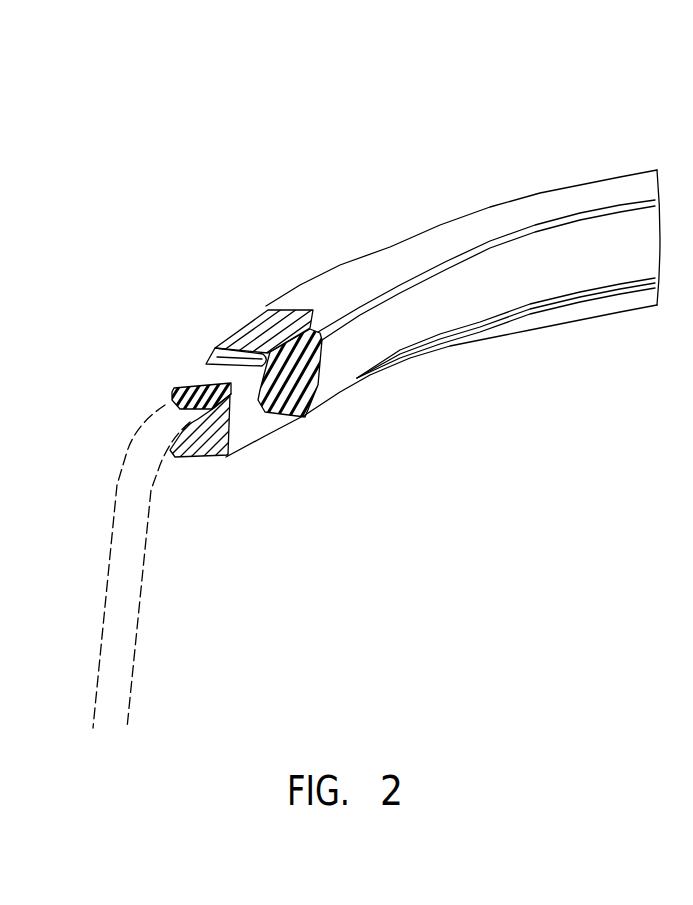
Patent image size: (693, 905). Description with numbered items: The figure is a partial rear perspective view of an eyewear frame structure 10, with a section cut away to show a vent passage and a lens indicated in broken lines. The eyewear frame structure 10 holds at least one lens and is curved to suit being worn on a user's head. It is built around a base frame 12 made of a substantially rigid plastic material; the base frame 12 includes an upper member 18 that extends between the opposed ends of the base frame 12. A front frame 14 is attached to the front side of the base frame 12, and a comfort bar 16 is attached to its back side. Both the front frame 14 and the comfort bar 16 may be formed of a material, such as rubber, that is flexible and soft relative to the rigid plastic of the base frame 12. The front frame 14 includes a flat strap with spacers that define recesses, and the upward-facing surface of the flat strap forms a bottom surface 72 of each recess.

The eyewear frame structure 10 is at (602, 145).
The base frame 12 is at (243, 320).
The front frame 14 is at (176, 392).
The comfort bar 16 is at (387, 343).
The upper member 18 is at (240, 420).
The bottom surface 72 is at (211, 377).